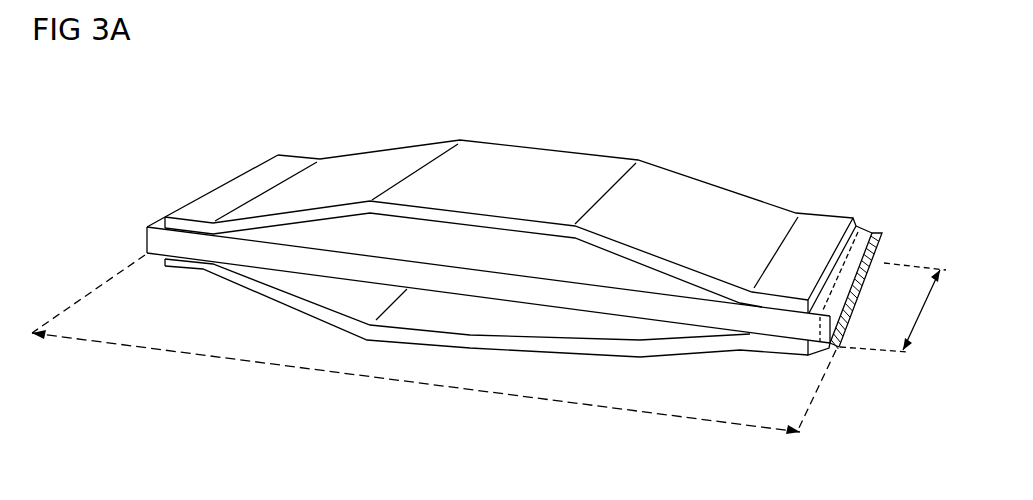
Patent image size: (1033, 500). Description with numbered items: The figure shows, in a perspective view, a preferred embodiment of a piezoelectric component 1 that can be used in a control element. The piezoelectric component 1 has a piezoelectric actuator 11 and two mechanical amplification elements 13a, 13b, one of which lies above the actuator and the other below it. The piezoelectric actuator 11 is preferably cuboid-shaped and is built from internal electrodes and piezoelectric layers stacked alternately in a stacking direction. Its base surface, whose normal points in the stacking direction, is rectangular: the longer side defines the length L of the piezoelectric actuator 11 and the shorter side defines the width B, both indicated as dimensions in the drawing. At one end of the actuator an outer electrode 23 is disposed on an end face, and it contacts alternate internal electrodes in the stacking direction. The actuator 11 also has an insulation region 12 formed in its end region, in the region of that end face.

The piezoelectric component 1 is at (793, 112).
The piezoelectric actuator 11 is at (705, 313).
The insulation region 12 is at (868, 232).
The mechanical amplification element 13a is at (538, 143).
The mechanical amplification element 13b is at (455, 350).
The outer electrode 23 is at (858, 291).
The length L is at (436, 390).
The width B is at (921, 318).